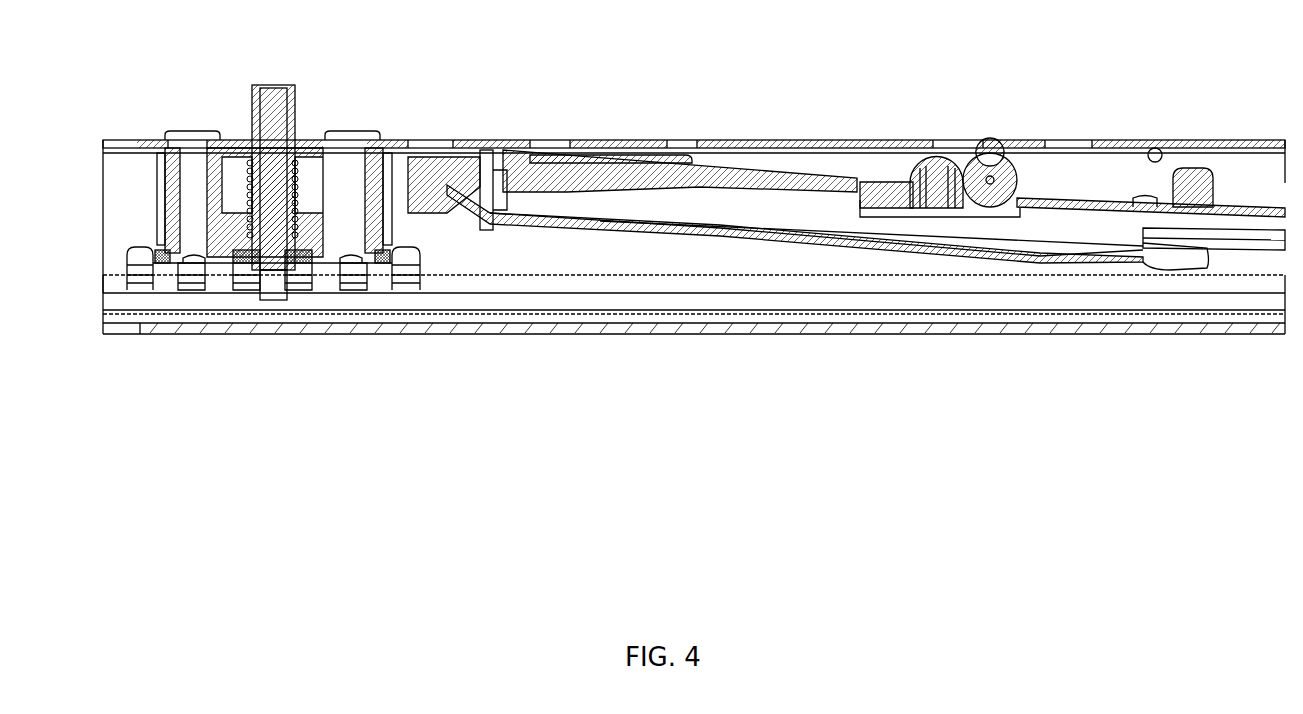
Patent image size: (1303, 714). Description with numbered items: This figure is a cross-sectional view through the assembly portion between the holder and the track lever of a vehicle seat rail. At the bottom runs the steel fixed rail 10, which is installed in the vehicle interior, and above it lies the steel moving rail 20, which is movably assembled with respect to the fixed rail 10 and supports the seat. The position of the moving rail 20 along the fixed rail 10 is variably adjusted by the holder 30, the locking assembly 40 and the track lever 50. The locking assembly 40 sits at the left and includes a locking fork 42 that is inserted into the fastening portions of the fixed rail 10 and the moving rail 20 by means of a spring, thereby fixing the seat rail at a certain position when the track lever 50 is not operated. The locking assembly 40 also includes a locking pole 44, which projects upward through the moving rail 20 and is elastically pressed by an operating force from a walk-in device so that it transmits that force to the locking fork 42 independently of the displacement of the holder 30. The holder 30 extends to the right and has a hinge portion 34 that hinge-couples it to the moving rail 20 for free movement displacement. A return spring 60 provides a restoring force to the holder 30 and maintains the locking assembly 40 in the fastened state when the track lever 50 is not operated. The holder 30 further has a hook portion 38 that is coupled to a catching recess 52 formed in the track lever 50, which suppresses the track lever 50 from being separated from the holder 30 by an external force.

The fixed rail 10 is at (788, 350).
The moving rail 20 is at (737, 130).
The holder 30 is at (825, 166).
The hinge portion 34 is at (1010, 156).
The hook portion 38 is at (522, 152).
The locking assembly 40 is at (233, 218).
The locking fork 42 is at (382, 265).
The locking pole 44 is at (273, 86).
The track lever 50 is at (599, 240).
The catching recess 52 is at (547, 194).
The return spring 60 is at (998, 150).